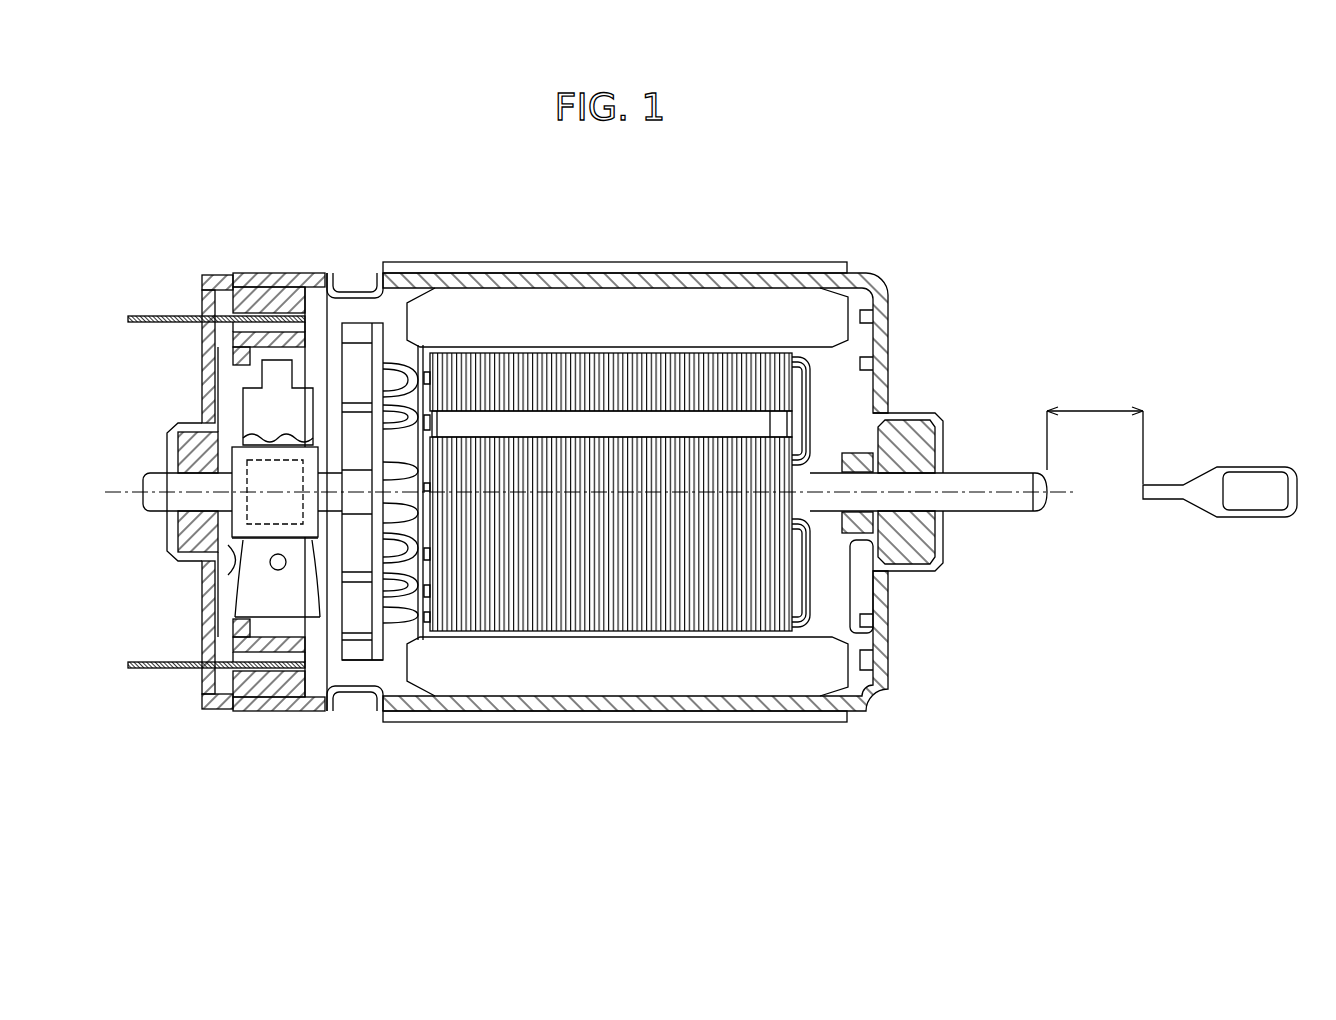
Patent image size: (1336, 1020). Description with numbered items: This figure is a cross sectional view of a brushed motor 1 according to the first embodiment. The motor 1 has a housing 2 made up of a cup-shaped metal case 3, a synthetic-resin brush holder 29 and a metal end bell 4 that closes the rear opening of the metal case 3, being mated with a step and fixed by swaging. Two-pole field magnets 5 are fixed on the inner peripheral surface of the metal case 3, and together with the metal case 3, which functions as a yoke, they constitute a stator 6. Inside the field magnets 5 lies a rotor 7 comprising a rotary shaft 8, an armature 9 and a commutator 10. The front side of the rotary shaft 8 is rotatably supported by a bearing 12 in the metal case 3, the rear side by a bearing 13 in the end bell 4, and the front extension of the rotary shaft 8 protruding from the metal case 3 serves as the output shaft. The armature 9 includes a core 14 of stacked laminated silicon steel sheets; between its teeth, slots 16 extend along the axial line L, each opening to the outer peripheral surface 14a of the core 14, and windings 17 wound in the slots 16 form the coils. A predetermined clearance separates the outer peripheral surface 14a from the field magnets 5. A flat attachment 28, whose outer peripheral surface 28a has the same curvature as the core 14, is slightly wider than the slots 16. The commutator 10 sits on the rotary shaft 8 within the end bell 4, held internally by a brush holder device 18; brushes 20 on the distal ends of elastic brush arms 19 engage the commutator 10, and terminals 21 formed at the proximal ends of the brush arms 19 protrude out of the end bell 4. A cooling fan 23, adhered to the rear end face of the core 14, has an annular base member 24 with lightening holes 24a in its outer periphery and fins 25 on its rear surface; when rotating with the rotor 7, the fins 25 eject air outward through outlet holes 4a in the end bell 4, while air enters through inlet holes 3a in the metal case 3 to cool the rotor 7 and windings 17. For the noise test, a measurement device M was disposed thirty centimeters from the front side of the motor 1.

The motor 1 is at (458, 229).
The housing 2 is at (312, 208).
The metal case 3 is at (396, 273).
The inlet holes 3a is at (870, 657).
The end bell 4 is at (318, 273).
The outlet holes 4a is at (342, 300).
The field magnets 5 is at (610, 300).
The stator 6 is at (678, 320).
The rotor 7 is at (763, 350).
The rotary shaft 8 is at (828, 503).
The armature 9 is at (955, 290).
The commutator 10 is at (242, 453).
The bearing 12 is at (918, 448).
The bearing 13 is at (188, 453).
The core 14 is at (782, 345).
The outer peripheral surface 14a is at (625, 378).
The slots 16 is at (458, 418).
The windings 17 is at (815, 408).
The brush holder device 18 is at (234, 558).
The brush arms 19 is at (263, 600).
The brushes 20 is at (177, 458).
The terminals 21 is at (130, 316).
The cooling fan 23 is at (357, 664).
The base member 24 is at (375, 657).
The lightening holes 24a is at (403, 585).
The fins 25 is at (343, 577).
The flat attachment 28 is at (510, 430).
The outer peripheral surface 28a is at (570, 432).
The brush holder 29 is at (243, 296).
The axial line L is at (133, 494).
The measurement device M is at (1252, 520).